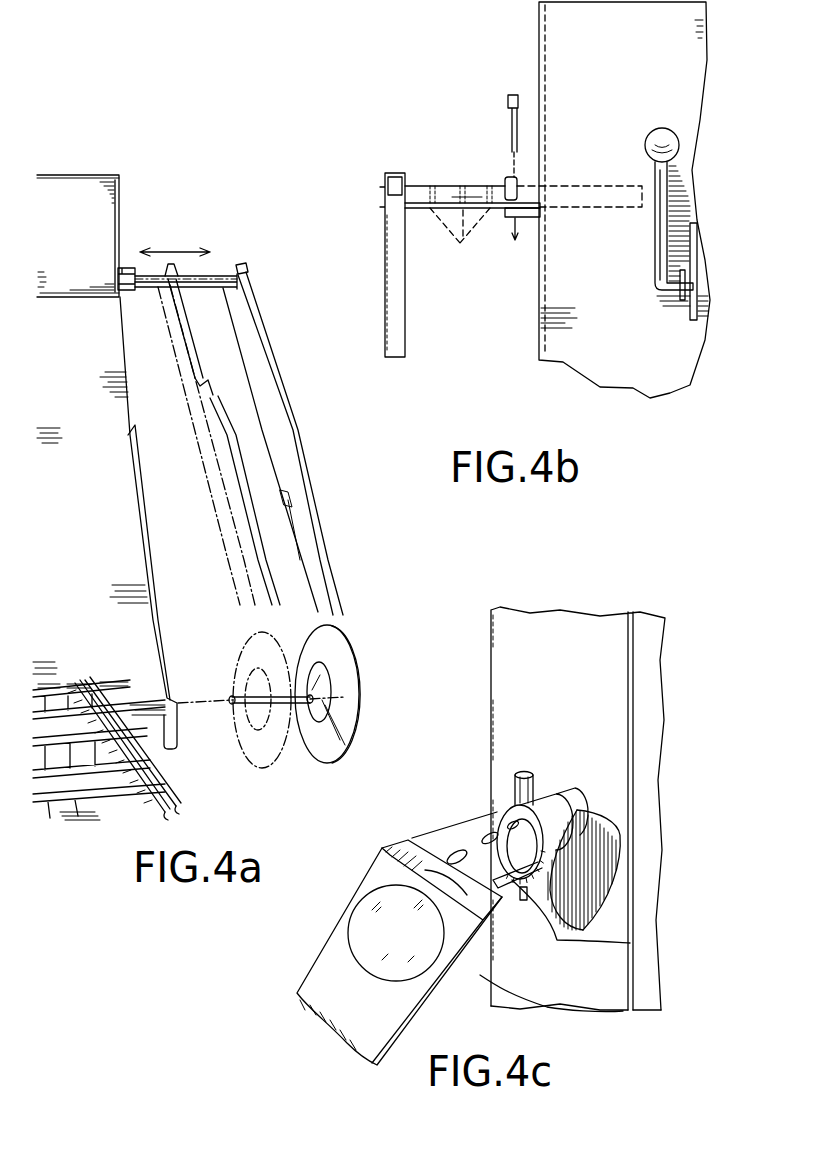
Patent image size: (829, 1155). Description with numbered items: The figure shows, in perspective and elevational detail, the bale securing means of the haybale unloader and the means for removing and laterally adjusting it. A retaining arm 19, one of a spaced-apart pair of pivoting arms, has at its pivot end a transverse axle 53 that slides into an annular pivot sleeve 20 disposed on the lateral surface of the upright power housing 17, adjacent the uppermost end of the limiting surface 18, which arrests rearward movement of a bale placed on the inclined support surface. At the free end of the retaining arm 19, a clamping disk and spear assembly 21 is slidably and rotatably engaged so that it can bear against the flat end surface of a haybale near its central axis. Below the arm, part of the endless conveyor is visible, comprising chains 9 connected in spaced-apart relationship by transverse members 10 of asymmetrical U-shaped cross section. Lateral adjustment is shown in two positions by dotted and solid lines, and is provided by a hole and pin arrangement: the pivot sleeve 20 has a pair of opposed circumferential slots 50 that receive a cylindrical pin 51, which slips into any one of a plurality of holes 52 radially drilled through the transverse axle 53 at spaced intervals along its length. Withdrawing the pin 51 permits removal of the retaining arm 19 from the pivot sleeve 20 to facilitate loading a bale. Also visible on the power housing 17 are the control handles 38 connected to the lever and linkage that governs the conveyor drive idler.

In FIG. 4a, the chains 9 is at (178, 795).
In FIG. 4a, the transverse members 10 is at (103, 828).
In FIG. 4b, the power housing 17 is at (539, 60).
In FIG. 4c, the power housing 17 is at (603, 648).
In FIG. 4a, the limiting surface 18 is at (108, 556).
In FIG. 4a, the retaining arms 19 is at (270, 425).
In FIG. 4b, the retaining arms 19 is at (390, 290).
In FIG. 4c, the retaining arms 19 is at (392, 1010).
In FIG. 4a, the pivot sleeves 20 is at (128, 268).
In FIG. 4b, the pivot sleeves 20 is at (530, 217).
In FIG. 4c, the pivot sleeves 20 is at (630, 943).
In FIG. 4a, the clamping disk and spear assembly 21 is at (340, 685).
In FIG. 4b, the control handles 38 is at (662, 140).
In FIG. 4b, the circumferential slots 50 is at (513, 190).
In FIG. 4c, the circumferential slots 50 is at (558, 800).
In FIG. 4b, the cylindrical pin 51 is at (512, 135).
In FIG. 4c, the cylindrical pin 51 is at (527, 773).
In FIG. 4b, the holes 52 is at (460, 241).
In FIG. 4c, the holes 52 is at (460, 855).
In FIG. 4a, the transverse axle 53 is at (215, 276).
In FIG. 4b, the transverse axle 53 is at (425, 192).
In FIG. 4c, the transverse axle 53 is at (493, 877).